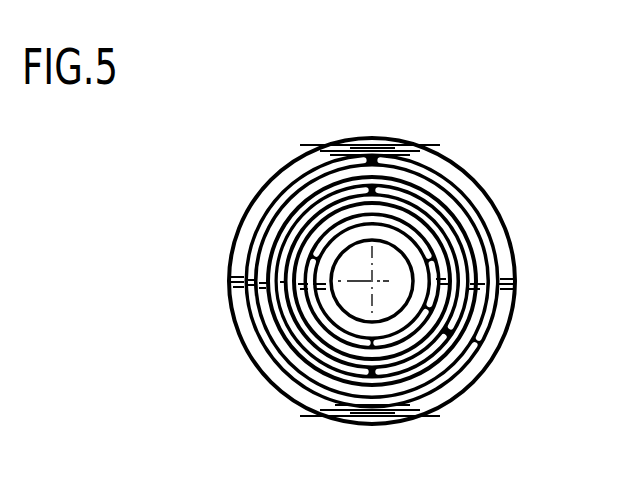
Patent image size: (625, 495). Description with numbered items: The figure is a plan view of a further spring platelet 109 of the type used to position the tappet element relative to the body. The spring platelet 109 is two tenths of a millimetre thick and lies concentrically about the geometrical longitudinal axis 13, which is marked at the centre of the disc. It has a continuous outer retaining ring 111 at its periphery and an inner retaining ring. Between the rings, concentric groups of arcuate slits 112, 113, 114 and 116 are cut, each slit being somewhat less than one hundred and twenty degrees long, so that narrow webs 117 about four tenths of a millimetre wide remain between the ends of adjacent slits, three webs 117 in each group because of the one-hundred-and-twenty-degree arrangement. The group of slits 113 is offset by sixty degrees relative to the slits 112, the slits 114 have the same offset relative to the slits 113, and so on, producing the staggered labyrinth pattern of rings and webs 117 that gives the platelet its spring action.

The geometrical longitudinal axis 13 is at (371, 281).
The spring platelet 109 is at (512, 243).
The outer retaining ring 111 is at (516, 290).
The slits 112 is at (302, 181).
The slits 113 is at (428, 193).
The slits 114 is at (450, 305).
The slits 116 is at (415, 333).
The webs 117 is at (266, 341).